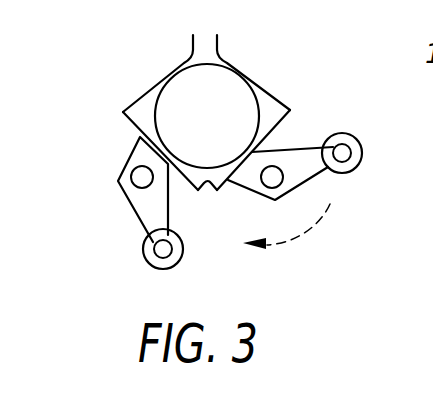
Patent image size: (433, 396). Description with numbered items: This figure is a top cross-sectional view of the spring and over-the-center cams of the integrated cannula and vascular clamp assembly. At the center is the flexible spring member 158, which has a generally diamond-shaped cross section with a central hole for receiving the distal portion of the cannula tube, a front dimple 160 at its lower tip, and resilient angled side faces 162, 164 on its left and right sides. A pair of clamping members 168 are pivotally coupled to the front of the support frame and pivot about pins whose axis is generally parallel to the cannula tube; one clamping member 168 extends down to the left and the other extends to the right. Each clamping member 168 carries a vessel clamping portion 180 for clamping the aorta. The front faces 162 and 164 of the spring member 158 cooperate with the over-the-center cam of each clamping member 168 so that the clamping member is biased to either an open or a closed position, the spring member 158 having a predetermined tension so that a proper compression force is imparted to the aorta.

The spring member 158 is at (250, 78).
The front dimple 160 is at (202, 194).
The resilient angled side face 162 is at (123, 113).
The resilient angled side face 164 is at (277, 127).
The clamping member 168 is at (135, 215).
The vessel clamping portion 180 is at (143, 255).